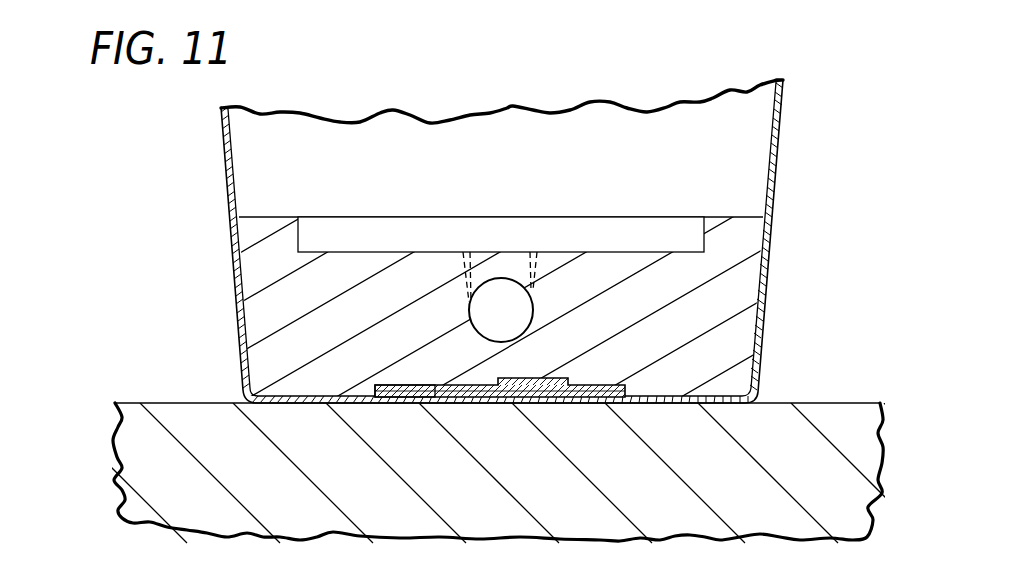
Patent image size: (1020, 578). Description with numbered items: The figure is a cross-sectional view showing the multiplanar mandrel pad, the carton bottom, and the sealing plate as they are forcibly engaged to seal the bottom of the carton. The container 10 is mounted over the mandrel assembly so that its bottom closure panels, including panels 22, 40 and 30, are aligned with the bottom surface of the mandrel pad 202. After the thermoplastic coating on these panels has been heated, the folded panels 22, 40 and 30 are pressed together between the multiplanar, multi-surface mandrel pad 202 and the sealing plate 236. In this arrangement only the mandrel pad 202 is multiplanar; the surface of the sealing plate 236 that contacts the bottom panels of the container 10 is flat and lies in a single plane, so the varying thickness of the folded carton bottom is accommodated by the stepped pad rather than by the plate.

The container 10 is at (237, 271).
The mandrel pad 202 is at (263, 309).
The bottom closure panel 22 is at (511, 425).
The bottom closure panel 40 is at (597, 403).
The bottom closure panel 30 is at (404, 403).
The sealing plate 236 is at (148, 445).